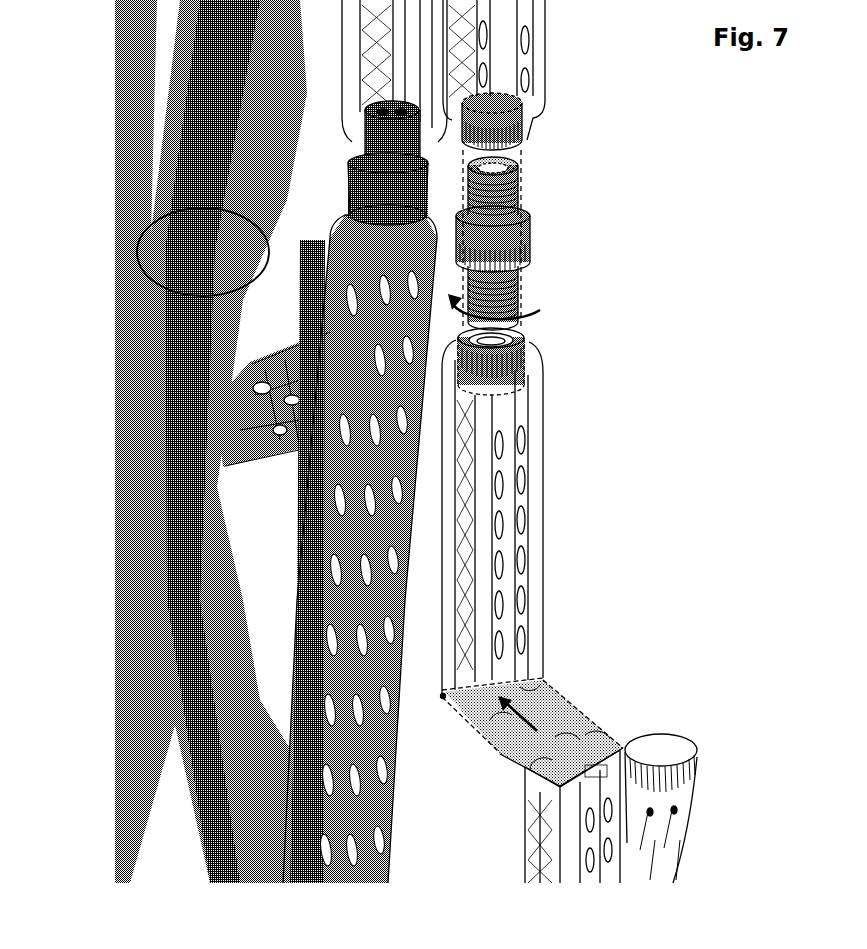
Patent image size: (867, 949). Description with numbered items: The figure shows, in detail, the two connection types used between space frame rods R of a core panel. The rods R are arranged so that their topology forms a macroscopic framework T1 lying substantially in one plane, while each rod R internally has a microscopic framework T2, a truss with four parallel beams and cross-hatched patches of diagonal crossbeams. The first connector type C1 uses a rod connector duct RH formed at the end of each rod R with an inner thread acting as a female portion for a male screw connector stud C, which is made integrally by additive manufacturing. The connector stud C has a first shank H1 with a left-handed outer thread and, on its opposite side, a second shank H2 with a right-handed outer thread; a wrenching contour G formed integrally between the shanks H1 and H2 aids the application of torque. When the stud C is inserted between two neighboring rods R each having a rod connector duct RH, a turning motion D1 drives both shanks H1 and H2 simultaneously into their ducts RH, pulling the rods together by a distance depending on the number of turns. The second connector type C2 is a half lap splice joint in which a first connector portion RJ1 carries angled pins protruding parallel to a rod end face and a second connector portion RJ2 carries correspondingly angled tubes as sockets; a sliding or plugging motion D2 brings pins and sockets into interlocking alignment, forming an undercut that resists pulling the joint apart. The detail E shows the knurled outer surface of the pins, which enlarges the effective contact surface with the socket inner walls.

The macroscopic framework T1 is at (100, 167).
The detail E is at (138, 262).
The connector type C1 is at (348, 174).
The space frame rod R is at (528, 48).
The rod connector duct RH is at (533, 124).
The first shank H1 is at (512, 195).
The wrenching contour G is at (525, 240).
The connector stud C is at (568, 265).
The second shank H2 is at (520, 285).
The turning motion D1 is at (540, 328).
The microscopic framework T2 is at (540, 454).
The first connector portion RJ1 is at (534, 688).
The connector type C2 is at (587, 686).
The second connector portion RJ2 is at (602, 738).
The sliding or plugging motion D2 is at (512, 745).